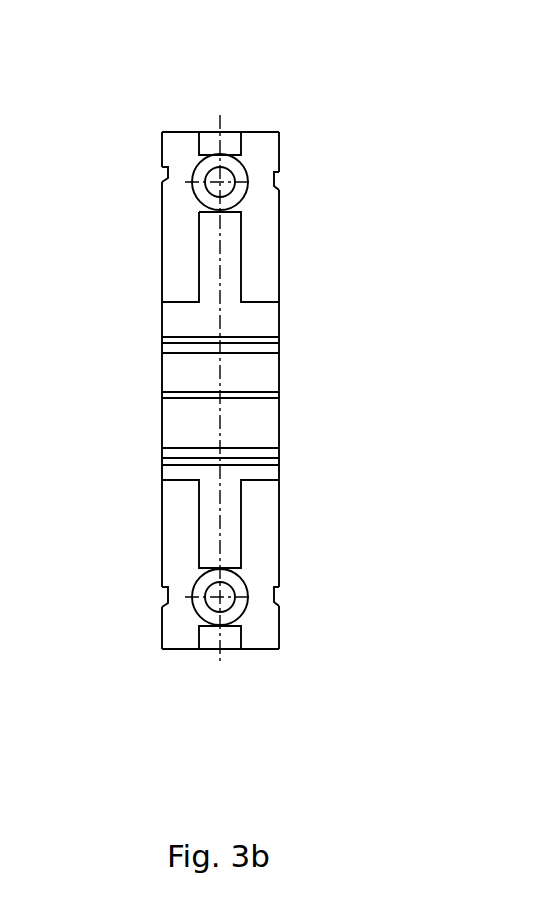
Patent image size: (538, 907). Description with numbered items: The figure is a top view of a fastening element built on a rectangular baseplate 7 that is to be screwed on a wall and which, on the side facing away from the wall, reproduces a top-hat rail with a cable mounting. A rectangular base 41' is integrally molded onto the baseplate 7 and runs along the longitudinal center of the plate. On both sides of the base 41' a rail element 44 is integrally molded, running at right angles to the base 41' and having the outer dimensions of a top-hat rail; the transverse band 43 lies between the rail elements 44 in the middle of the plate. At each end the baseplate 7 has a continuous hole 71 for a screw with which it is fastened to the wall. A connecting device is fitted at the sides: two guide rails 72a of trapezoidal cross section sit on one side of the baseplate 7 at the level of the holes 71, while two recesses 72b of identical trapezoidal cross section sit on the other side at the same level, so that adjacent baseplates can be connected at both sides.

The baseplate 7 is at (270, 548).
The base 41' is at (320, 391).
The middle band / rib 43 is at (265, 392).
The rail element 44 is at (265, 317).
The continuous hole 71 is at (413, 645).
The guide rail 72a is at (413, 583).
The recess 72b is at (72, 652).